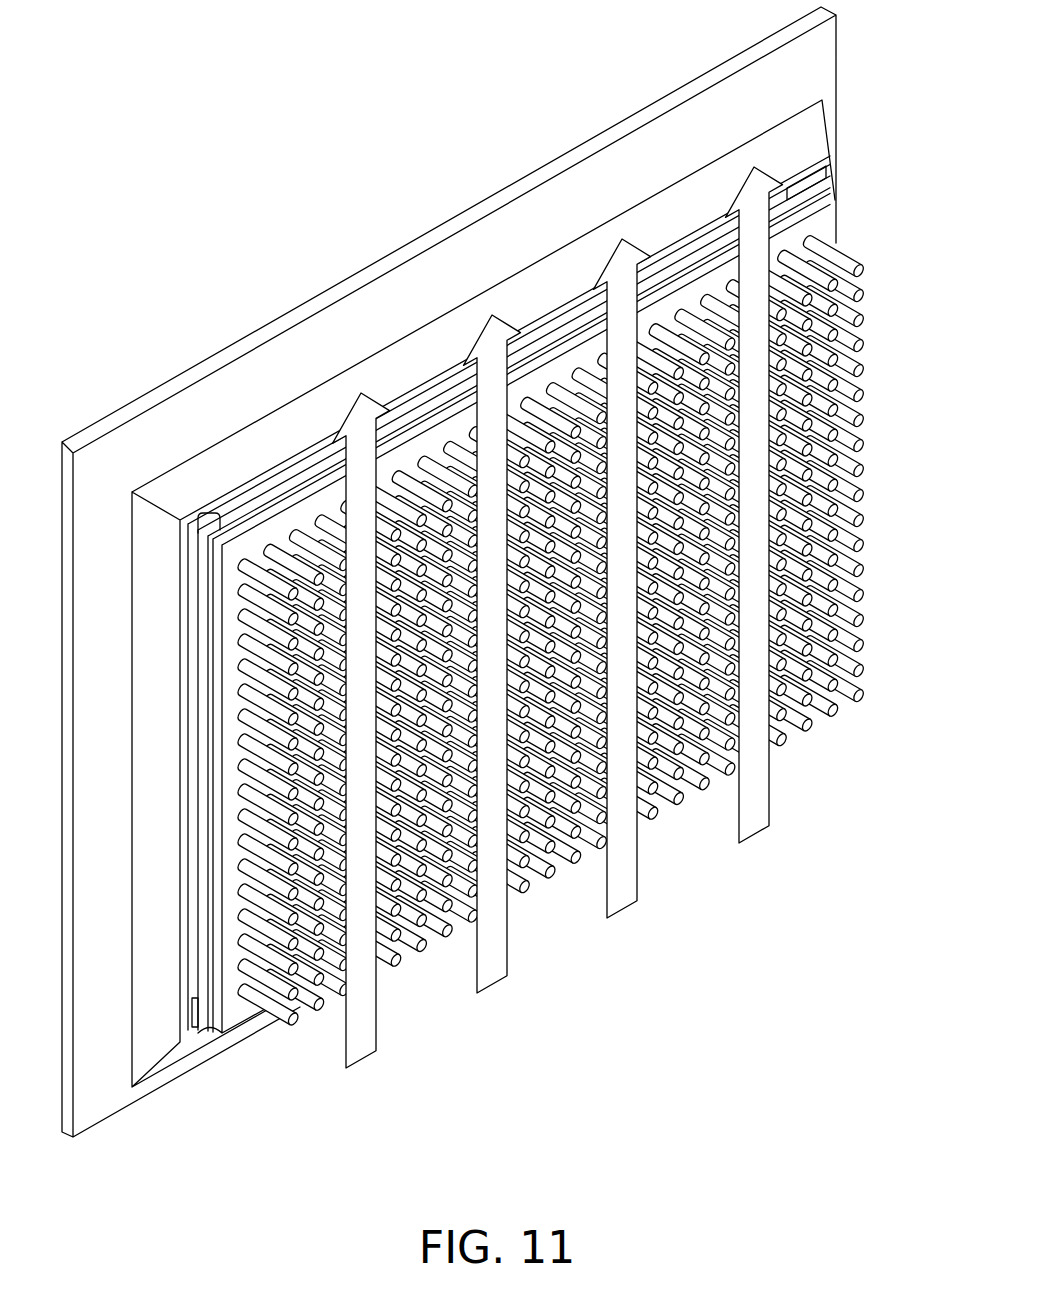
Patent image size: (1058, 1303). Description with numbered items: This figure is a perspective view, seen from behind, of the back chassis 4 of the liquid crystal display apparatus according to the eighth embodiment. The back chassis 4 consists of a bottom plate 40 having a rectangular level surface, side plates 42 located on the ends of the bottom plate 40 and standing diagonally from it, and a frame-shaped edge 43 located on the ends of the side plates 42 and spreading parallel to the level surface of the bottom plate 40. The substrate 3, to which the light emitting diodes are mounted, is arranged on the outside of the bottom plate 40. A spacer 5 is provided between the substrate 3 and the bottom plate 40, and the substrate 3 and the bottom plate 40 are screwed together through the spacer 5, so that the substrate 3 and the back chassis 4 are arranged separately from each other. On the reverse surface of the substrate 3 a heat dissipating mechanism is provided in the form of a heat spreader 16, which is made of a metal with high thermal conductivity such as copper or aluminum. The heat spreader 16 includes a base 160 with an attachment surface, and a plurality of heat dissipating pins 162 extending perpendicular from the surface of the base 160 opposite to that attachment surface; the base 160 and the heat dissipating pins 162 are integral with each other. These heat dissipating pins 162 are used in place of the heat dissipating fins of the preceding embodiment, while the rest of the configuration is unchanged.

The substrate 3 is at (825, 190).
The back chassis 4 is at (453, 593).
The bottom plate 40 is at (252, 457).
The side plates 42 is at (228, 507).
The frame-shaped edge 43 is at (514, 610).
The spacer 5 is at (823, 165).
The heat spreader 16 is at (531, 548).
The base 160 is at (418, 432).
The heat dissipating pins 162 is at (455, 467).